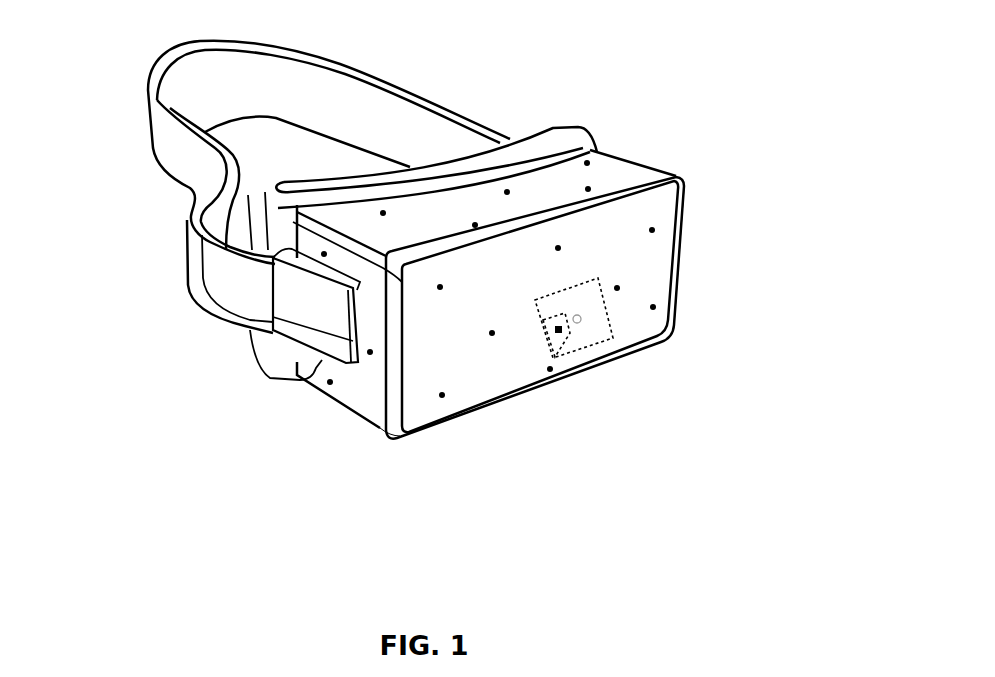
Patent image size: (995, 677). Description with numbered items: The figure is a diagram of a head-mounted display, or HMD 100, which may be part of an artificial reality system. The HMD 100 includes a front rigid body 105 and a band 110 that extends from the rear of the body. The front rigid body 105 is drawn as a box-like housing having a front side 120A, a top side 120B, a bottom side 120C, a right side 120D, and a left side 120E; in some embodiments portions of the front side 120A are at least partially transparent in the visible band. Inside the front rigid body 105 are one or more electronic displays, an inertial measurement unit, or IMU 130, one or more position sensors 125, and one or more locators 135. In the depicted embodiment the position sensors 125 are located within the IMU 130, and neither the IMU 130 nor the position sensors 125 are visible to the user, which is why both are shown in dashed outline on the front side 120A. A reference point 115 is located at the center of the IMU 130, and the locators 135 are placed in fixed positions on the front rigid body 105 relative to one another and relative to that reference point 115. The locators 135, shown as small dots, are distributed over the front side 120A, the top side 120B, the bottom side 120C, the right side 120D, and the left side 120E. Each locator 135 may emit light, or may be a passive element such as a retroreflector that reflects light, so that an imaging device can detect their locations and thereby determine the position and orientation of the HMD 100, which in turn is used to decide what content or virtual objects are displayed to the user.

The head-mounted display (HMD) 100 is at (77, 43).
The front rigid body 105 is at (474, 303).
The band 110 is at (423, 98).
The reference point 115 is at (578, 327).
The front side 120A is at (423, 398).
The top side 120B is at (363, 215).
The bottom side 120C is at (330, 413).
The right side 120D is at (363, 378).
The left side 120E is at (653, 166).
The position sensors 125 is at (559, 334).
The inertial measurement unit (IMU) 130 is at (618, 330).
The locators 135 is at (653, 307).